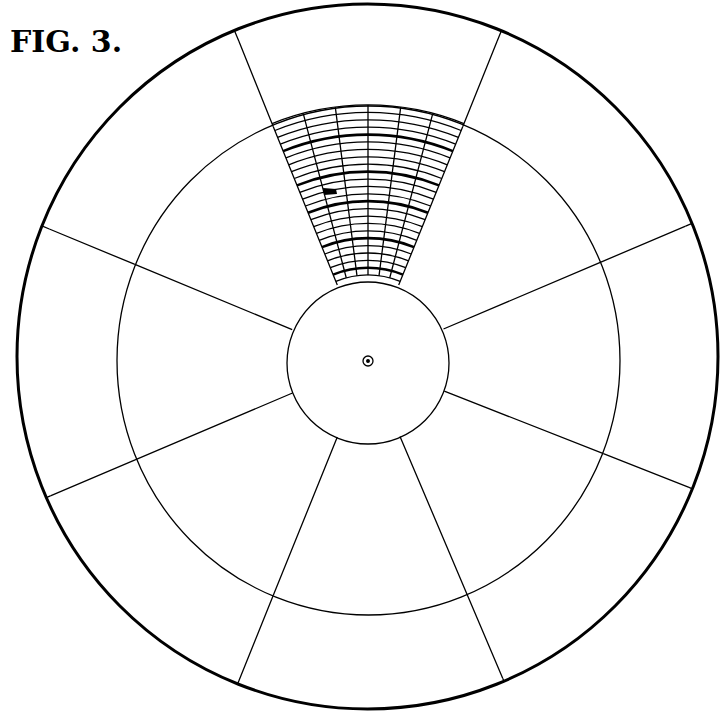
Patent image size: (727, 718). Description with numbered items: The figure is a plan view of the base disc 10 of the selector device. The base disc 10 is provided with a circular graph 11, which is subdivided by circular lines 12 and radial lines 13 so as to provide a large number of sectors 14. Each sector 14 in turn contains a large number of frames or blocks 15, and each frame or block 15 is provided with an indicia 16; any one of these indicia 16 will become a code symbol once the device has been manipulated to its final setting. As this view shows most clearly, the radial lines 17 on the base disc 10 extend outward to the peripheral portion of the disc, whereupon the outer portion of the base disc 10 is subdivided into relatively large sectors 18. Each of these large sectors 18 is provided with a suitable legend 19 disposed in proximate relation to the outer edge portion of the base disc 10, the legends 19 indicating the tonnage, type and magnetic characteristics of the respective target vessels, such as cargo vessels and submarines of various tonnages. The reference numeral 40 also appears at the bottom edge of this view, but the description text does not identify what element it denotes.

The base disc 10 is at (570, 651).
The circular graph 11 is at (366, 177).
The circular lines 12 is at (313, 128).
The radial lines 13 is at (177, 281).
The sectors 14 is at (378, 146).
The frames or blocks 15 is at (345, 107).
The indicia 16 is at (320, 197).
The radial lines 17 is at (252, 85).
The sectors 18 is at (235, 31).
The legend 19 is at (489, 21).
The indicator 40 is at (302, 716).